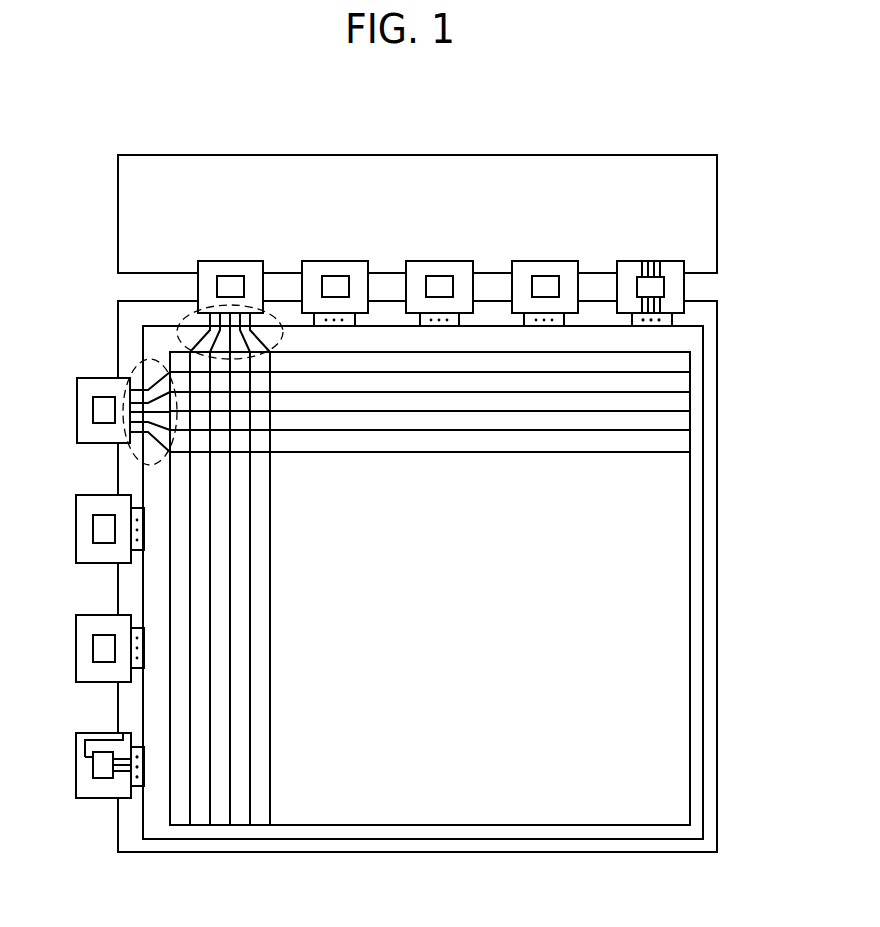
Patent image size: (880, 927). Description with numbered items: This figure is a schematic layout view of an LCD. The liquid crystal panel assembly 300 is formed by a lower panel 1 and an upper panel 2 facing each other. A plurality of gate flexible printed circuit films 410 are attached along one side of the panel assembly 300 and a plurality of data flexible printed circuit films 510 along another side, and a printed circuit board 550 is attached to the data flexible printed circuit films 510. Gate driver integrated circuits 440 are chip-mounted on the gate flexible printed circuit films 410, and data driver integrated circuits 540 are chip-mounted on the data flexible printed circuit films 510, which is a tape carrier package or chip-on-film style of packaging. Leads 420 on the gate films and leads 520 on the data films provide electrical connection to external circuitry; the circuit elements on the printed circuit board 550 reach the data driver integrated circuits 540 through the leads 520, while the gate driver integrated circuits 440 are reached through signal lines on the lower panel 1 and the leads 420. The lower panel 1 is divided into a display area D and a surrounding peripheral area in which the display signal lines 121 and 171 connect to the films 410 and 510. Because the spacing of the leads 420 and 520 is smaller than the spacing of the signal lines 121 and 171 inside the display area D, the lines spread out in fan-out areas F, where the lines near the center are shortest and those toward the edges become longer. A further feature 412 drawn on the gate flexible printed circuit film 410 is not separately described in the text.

The printed circuit board 550 is at (717, 216).
The data driver integrated circuit 540 is at (688, 273).
The data flexible printed circuit film 510 is at (667, 284).
The lead 520 is at (686, 311).
The display signal line 121 is at (652, 392).
The lower panel 1 is at (717, 515).
The upper panel 2 is at (703, 563).
The liquid crystal panel assembly 300 is at (750, 517).
The display area D is at (690, 603).
The display signal line 171 is at (210, 704).
The test pad 412 is at (85, 748).
The gate driver integrated circuit 440 is at (93, 772).
The gate flexible printed circuit film 410 is at (95, 798).
The lead 420 is at (121, 774).
The fan-out region F is at (193, 320).